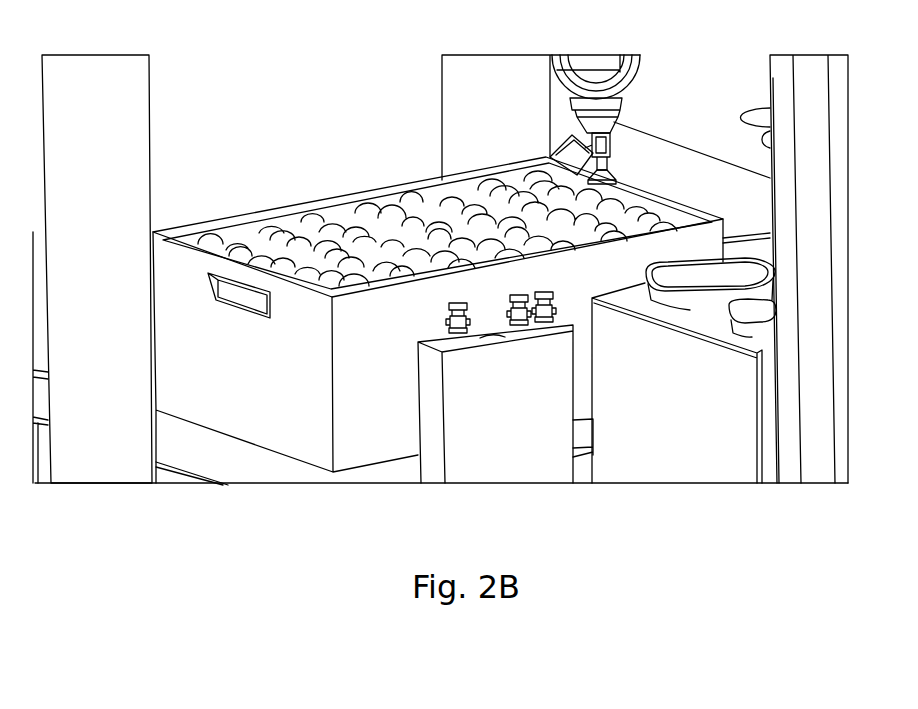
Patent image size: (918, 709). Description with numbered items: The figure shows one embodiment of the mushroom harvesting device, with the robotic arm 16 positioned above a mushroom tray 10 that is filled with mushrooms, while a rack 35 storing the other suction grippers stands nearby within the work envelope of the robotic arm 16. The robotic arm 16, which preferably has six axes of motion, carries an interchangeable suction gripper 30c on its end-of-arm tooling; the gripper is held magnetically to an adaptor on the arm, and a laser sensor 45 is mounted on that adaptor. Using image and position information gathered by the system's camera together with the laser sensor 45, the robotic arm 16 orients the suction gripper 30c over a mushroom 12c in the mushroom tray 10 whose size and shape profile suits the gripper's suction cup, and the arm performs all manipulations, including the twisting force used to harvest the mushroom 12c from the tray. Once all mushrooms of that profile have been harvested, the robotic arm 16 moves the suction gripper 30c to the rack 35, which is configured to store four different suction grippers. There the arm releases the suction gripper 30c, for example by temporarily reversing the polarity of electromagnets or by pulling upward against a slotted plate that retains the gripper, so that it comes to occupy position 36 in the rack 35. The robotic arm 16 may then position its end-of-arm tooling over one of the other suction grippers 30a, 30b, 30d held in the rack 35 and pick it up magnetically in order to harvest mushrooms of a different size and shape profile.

The mushroom tray 10 is at (270, 421).
The robotic arm 16 is at (592, 62).
The laser sensor 45 is at (573, 157).
The suction gripper 30c is at (607, 167).
The mushroom 12c is at (613, 183).
The rack 35 is at (427, 400).
The position 36 is at (492, 336).
The suction gripper 30a is at (548, 312).
The suction gripper 30b is at (523, 318).
The suction gripper 30d is at (472, 332).